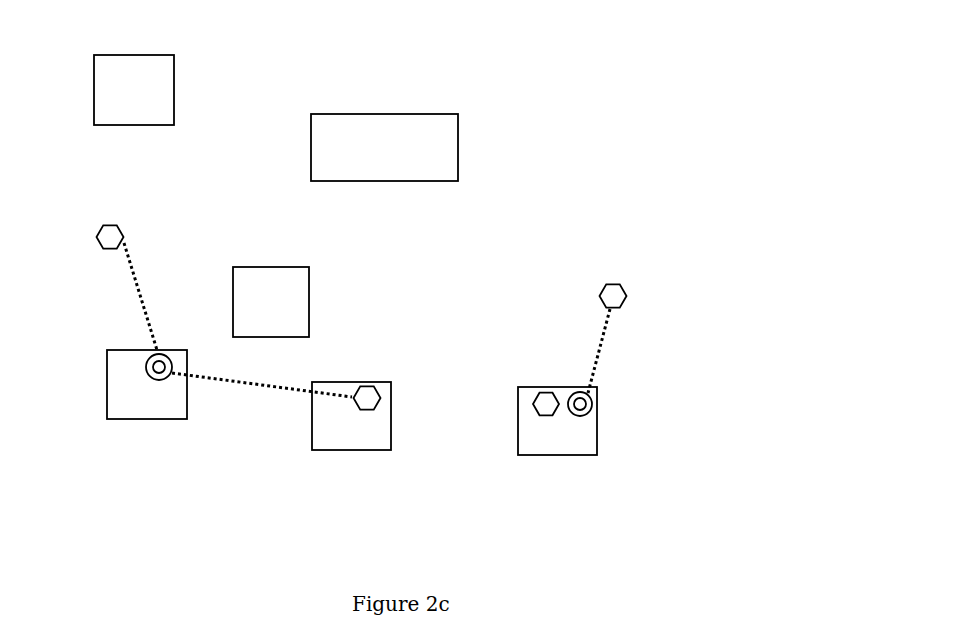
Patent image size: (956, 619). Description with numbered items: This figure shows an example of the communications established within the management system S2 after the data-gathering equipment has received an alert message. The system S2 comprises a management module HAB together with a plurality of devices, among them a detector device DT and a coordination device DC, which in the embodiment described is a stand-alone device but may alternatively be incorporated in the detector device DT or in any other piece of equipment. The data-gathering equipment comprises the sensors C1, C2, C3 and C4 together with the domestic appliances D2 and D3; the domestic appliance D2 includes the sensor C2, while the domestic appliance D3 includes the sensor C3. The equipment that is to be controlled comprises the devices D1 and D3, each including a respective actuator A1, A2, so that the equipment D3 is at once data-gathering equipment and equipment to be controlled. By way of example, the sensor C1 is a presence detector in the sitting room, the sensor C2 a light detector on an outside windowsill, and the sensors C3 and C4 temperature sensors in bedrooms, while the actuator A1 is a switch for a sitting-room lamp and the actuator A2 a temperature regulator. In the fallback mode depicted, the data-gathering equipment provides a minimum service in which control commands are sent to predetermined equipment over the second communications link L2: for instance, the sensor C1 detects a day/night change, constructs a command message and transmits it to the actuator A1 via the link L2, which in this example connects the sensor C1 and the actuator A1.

The detector device DT is at (134, 90).
The management module HAB is at (384, 147).
The coordination device DC is at (271, 302).
The system S2 is at (660, 106).
The sensor C1 is at (105, 225).
The sensor C2 is at (381, 402).
The sensor C3 is at (534, 404).
The sensor C4 is at (616, 284).
The second communications link L2 is at (139, 300).
The actuator A1 is at (146, 371).
The actuator A2 is at (590, 393).
The device D1 is at (141, 420).
The domestic appliance D2 is at (331, 451).
The domestic appliance D3 is at (565, 455).